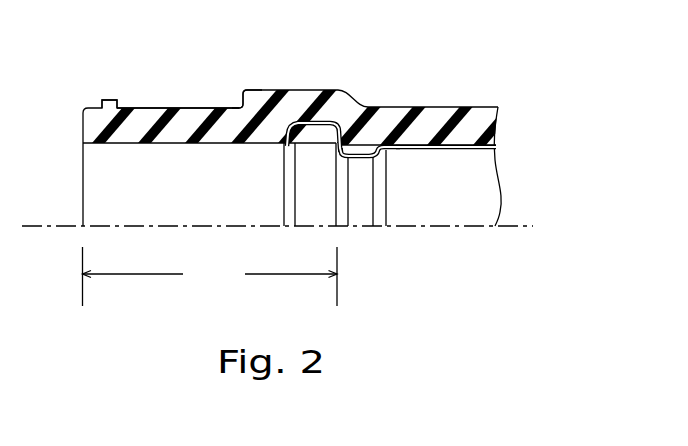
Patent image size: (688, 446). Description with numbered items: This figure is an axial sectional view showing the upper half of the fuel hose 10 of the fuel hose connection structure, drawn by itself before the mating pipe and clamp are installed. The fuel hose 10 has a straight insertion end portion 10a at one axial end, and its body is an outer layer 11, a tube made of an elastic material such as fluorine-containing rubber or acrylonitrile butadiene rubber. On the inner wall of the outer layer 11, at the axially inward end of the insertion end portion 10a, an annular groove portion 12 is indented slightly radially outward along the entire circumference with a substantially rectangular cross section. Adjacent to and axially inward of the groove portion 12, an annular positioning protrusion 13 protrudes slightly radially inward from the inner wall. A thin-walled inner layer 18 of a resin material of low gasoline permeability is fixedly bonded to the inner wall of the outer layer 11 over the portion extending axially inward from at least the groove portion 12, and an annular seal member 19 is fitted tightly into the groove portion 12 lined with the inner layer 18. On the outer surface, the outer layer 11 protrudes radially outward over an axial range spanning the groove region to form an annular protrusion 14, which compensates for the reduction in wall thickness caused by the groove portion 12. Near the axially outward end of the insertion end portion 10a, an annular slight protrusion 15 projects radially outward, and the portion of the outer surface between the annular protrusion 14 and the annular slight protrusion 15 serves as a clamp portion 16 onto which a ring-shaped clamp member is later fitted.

The fuel hose 10 is at (403, 102).
The insertion end portion 10a is at (210, 276).
The outer layer 11 is at (459, 106).
The groove portion 12 is at (304, 125).
The positioning protrusion 13 is at (364, 142).
The annular protrusion 14 is at (266, 91).
The annular slight protrusion 15 is at (112, 100).
The clamp portion 16 is at (170, 106).
The inner layer 18 is at (450, 148).
The seal member 19 is at (327, 131).